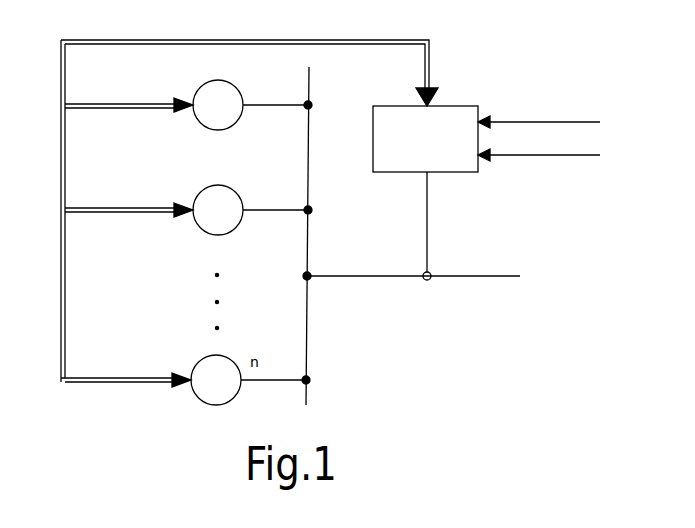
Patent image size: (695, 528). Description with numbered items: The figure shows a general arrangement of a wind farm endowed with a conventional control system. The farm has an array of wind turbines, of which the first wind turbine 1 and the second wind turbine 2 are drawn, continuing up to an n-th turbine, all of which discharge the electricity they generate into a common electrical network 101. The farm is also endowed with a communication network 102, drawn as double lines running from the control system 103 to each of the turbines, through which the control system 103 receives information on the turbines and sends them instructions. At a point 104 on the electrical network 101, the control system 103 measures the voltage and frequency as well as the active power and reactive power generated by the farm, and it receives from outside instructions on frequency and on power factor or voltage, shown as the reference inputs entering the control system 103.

The wind turbine 1 is at (250, 104).
The wind turbine 2 is at (250, 209).
The electrical network 101 is at (411, 236).
The communication network 102 is at (232, 213).
The control system 103 is at (486, 137).
The measurement point 104 is at (511, 226).